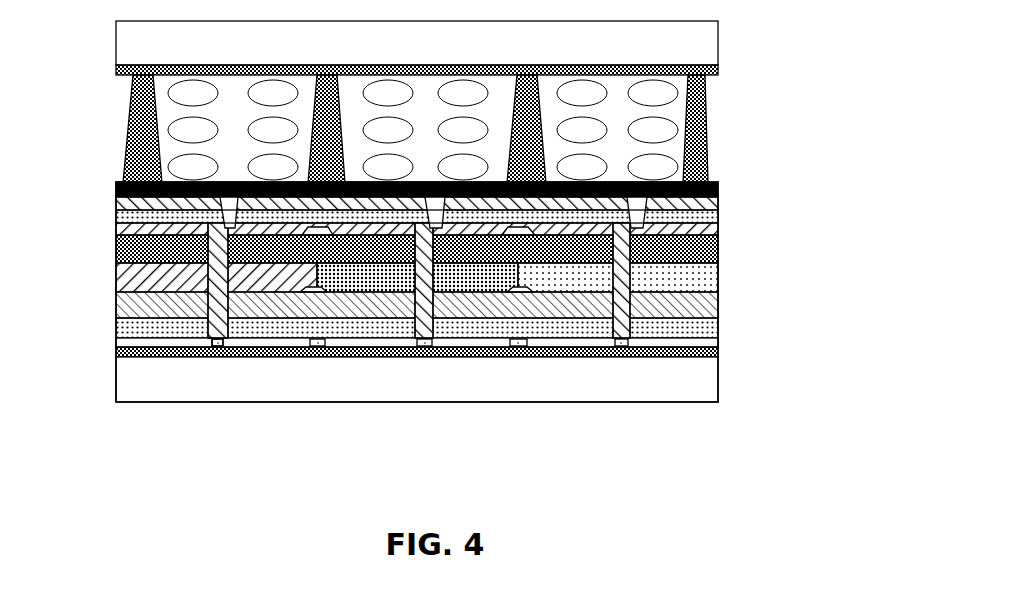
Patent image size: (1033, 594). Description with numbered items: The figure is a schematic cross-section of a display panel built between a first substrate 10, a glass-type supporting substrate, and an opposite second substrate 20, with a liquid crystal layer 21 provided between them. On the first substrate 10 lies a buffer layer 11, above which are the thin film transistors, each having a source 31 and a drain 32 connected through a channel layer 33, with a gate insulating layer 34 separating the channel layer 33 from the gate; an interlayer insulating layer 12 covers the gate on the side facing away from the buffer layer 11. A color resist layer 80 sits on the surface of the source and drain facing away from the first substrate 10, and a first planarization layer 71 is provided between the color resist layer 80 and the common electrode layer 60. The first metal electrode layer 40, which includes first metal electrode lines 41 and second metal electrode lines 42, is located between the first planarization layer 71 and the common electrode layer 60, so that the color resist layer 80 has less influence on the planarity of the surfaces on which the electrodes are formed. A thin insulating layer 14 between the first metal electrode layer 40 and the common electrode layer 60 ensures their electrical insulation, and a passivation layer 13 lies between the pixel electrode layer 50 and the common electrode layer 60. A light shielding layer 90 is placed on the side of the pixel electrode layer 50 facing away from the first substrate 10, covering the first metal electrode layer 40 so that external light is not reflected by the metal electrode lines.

The first substrate 10 is at (718, 398).
The buffer layer 11 is at (717, 353).
The interlayer insulating layer 12 is at (717, 303).
The passivation layer 13 is at (717, 203).
The insulating layer 14 is at (717, 222).
The second substrate 20 is at (708, 42).
The liquid crystal layer 21 is at (707, 112).
The source 31 is at (332, 330).
The drain 32 is at (214, 345).
The channel layer 33 is at (227, 357).
The gate insulating layer 34 is at (139, 337).
The first metal electrode layer 40 is at (531, 349).
The first metal electrode lines 41 is at (496, 330).
The second metal electrode lines 42 is at (440, 327).
The pixel electrode layer 50 is at (224, 186).
The common electrode layer 60 is at (116, 213).
The first planarization layer 71 is at (717, 250).
The color resist layer 80 is at (717, 282).
The light shielding layer 90 is at (717, 185).